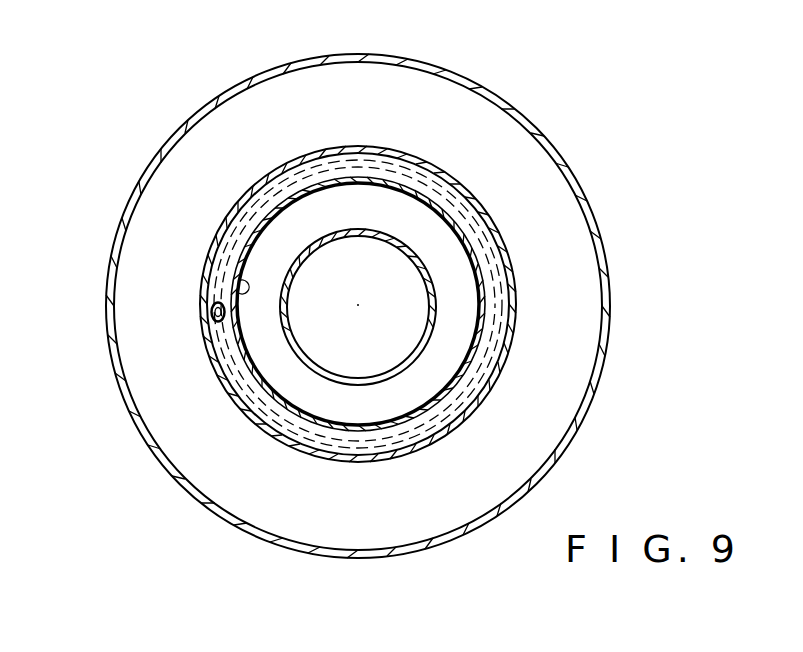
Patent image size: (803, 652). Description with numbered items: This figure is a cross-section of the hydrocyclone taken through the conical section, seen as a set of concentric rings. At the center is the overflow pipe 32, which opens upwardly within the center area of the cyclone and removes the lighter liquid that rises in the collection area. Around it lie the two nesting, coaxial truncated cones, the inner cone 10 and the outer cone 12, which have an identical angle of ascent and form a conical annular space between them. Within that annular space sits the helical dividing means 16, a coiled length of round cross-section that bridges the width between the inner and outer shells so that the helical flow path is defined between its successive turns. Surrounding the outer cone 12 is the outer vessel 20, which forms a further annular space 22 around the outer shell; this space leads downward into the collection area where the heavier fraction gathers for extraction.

The inner cone 10 is at (232, 292).
The outer cone 12 is at (467, 187).
The helical dividing means 16 is at (417, 163).
The outer vessel 20 is at (583, 185).
The annular space 22 is at (222, 135).
The overflow pipe 32 is at (432, 341).